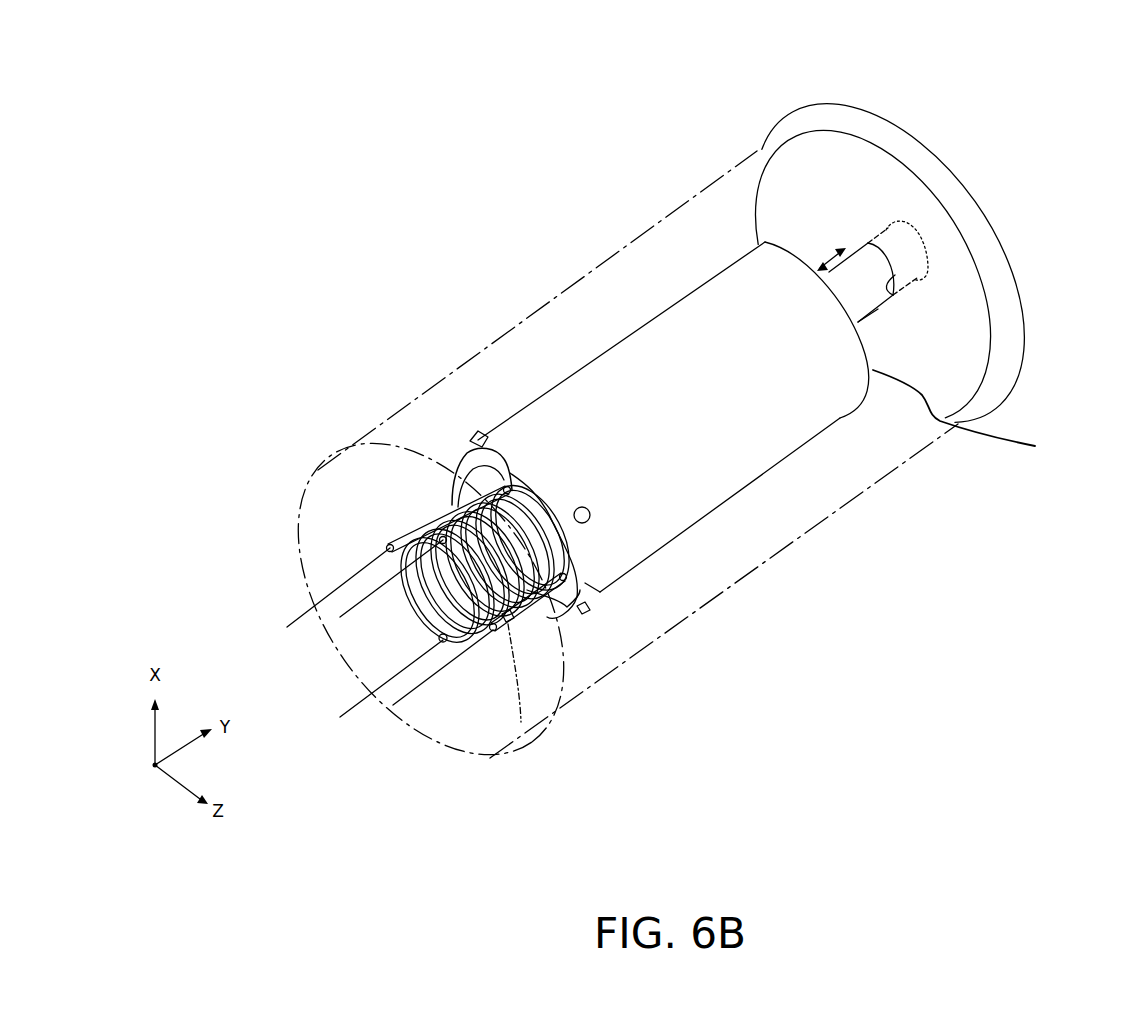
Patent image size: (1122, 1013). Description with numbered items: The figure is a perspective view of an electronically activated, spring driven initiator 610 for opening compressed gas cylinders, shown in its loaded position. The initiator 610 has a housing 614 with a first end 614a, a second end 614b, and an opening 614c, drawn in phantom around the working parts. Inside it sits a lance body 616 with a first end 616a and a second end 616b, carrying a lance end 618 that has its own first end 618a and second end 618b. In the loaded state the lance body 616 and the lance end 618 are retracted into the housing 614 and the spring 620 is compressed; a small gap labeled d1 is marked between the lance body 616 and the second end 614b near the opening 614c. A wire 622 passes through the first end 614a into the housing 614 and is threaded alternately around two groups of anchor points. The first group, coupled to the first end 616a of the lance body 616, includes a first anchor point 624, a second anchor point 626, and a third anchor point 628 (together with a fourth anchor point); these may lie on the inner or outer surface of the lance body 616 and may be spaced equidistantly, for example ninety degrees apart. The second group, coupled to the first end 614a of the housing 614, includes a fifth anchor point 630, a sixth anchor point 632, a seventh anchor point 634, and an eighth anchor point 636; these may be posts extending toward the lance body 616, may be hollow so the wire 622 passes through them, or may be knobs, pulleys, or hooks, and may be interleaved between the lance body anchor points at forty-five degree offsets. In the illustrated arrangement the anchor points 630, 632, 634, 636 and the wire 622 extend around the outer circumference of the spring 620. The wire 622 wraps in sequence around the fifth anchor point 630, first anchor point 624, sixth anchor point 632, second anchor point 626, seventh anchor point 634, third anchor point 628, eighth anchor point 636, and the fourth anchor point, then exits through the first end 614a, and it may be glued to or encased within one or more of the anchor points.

The initiator 610 is at (384, 204).
The housing 614 is at (551, 300).
The first end 614a is at (443, 730).
The second end 614b is at (835, 117).
The opening 614c is at (912, 253).
The lance body 616 is at (726, 437).
The first end 616a is at (585, 583).
The second end 616b is at (981, 412).
The lance end 618 is at (864, 256).
The first end 618a is at (860, 323).
The second end 618b is at (897, 275).
The spring 620 is at (400, 537).
The wire 622 is at (296, 623).
The first anchor point 624 is at (585, 615).
The second anchor point 626 is at (590, 510).
The third anchor point 628 is at (477, 436).
The fifth anchor point 630 is at (440, 637).
The sixth anchor point 632 is at (509, 624).
The seventh anchor point 634 is at (452, 487).
The eighth anchor point 636 is at (448, 509).
The distance d1 is at (826, 260).